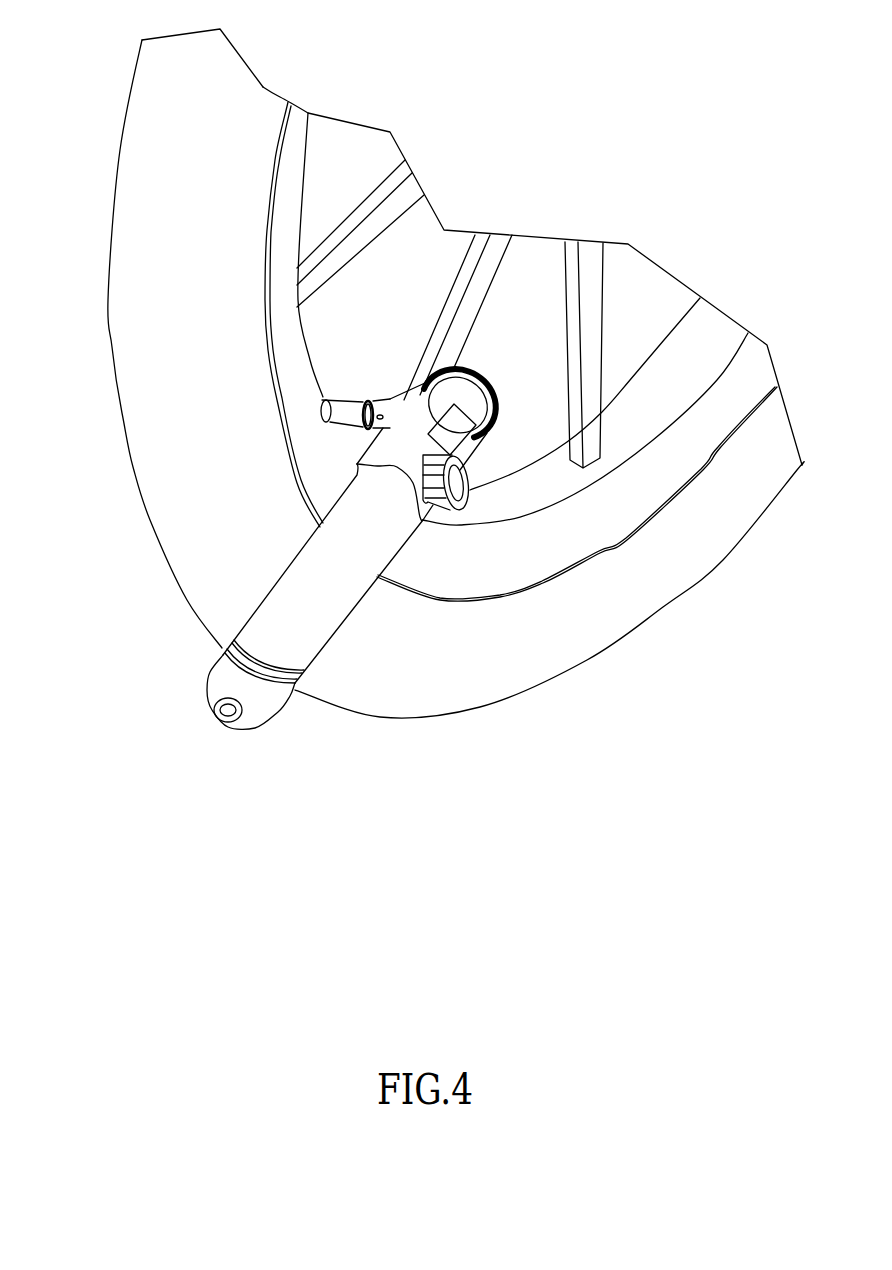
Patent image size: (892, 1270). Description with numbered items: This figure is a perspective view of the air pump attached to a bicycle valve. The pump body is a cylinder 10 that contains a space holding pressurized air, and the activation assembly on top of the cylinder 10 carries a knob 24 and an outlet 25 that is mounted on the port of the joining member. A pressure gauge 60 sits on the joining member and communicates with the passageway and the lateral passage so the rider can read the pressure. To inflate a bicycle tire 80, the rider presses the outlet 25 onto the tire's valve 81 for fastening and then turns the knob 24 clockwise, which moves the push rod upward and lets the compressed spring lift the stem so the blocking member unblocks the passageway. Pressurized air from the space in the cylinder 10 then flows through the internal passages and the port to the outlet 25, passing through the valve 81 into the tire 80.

The bicycle tire 80 is at (693, 553).
The valve 81 is at (322, 398).
The outlet 25 is at (328, 422).
The cylinder 10 is at (320, 625).
The knob 24 is at (492, 410).
The pressure gauge 60 is at (470, 487).